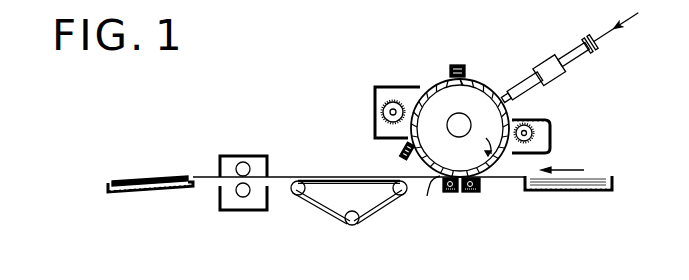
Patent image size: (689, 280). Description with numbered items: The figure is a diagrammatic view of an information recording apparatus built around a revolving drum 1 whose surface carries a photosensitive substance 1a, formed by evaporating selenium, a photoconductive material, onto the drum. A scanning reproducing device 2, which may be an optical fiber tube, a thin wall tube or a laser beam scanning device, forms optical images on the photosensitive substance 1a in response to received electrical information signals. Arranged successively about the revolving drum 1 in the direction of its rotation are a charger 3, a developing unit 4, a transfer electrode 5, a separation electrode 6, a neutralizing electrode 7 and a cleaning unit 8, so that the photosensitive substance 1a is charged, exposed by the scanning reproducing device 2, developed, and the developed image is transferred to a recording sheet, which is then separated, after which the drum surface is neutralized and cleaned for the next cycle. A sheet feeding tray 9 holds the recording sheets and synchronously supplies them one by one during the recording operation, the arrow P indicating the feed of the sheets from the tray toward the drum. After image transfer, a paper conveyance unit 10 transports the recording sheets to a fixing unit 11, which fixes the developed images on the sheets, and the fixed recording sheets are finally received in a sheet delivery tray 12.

The revolving drum 1 is at (472, 160).
The photosensitive substance 1a is at (425, 197).
The scanning reproducing device 2 is at (526, 82).
The charger 3 is at (457, 65).
The developing unit 4 is at (550, 120).
The transfer electrode 5 is at (471, 193).
The separation electrode 6 is at (449, 193).
The neutralizing electrode 7 is at (398, 152).
The cleaning unit 8 is at (375, 108).
The sheet feeding tray 9 is at (593, 194).
The paper conveyance unit 10 is at (324, 200).
The fixing unit 11 is at (241, 212).
The sheet delivery tray 12 is at (147, 195).
The paper transport direction P is at (592, 172).